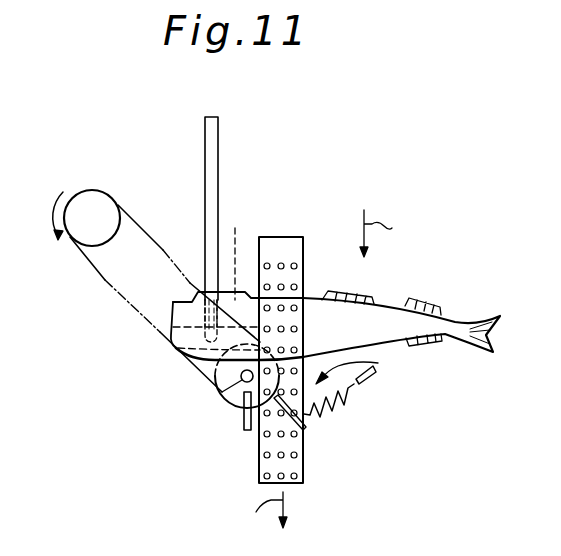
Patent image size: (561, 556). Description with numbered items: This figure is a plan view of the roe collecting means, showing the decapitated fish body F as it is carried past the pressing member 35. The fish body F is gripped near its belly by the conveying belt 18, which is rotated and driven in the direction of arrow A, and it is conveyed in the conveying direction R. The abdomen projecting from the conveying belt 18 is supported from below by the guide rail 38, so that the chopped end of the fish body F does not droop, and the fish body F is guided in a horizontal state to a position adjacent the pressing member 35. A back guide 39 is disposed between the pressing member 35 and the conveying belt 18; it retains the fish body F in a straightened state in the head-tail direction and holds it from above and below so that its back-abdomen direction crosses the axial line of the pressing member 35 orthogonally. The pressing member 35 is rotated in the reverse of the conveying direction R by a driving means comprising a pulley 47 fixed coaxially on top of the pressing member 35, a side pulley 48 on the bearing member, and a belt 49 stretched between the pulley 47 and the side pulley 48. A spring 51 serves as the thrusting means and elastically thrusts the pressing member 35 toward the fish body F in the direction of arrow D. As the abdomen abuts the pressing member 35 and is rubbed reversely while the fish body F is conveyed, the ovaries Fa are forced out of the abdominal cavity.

The conveying belt 18 is at (298, 470).
The pressing member 35 is at (222, 392).
The guide rail 38 is at (208, 163).
The back guide 39 is at (245, 420).
The pulley 47 is at (222, 372).
The side pulley 48 is at (84, 199).
The belt 49 is at (103, 277).
The spring 51 is at (340, 398).
The fish body F is at (380, 318).
The ovaries Fa is at (239, 250).
The conveying direction R is at (386, 233).
The arrow D direction D is at (357, 365).
The arrow A direction A is at (262, 515).